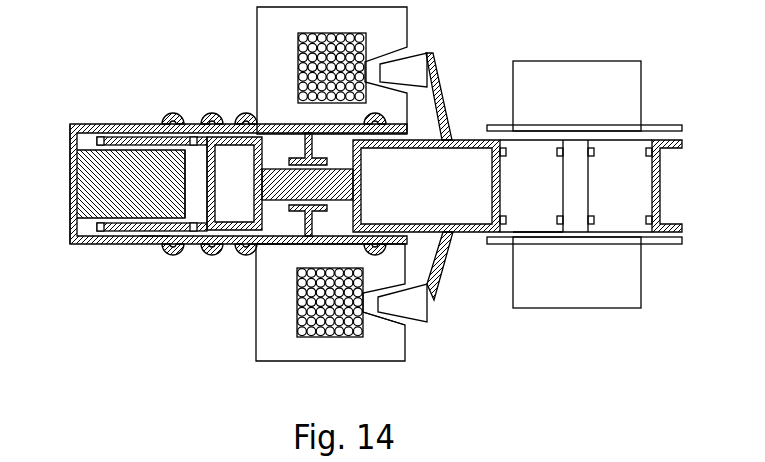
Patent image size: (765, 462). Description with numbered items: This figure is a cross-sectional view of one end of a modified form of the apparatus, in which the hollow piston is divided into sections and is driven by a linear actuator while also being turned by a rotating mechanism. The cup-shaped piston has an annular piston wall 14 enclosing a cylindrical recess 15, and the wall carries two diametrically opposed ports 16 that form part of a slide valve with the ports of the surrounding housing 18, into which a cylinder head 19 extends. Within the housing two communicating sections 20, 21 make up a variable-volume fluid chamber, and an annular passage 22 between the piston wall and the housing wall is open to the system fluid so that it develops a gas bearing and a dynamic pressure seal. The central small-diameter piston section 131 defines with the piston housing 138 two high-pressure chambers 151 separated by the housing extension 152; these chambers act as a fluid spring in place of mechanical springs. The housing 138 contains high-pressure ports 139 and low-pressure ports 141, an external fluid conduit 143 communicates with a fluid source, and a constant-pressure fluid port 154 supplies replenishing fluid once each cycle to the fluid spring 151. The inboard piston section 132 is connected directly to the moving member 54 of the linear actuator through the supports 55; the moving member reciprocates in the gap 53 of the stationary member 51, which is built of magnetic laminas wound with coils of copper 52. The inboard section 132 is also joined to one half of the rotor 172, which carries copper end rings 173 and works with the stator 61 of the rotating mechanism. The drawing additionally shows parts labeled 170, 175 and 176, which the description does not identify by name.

The piston wall 14 is at (128, 232).
The cylindrical recess 15 is at (101, 232).
The ports 16 is at (194, 232).
The housing 18 is at (109, 124).
The cylinder head 19 is at (95, 182).
The communicating section 20 is at (196, 169).
The communicating section 21 is at (83, 246).
The annular passage 22 is at (152, 240).
The stationary member 51 is at (331, 359).
The coils of copper 52 is at (306, 340).
The gap 53 is at (383, 316).
The moving member 54 is at (399, 311).
The support 55 is at (440, 85).
The stator 61 is at (564, 104).
The central piston section 131 is at (344, 188).
The inboard piston section 132 is at (410, 194).
The piston housing 138 is at (265, 247).
The high-pressure ports 139 is at (173, 113).
The low-pressure ports 141 is at (217, 114).
The external fluid conduit 143 is at (250, 115).
The chambers 151 is at (325, 234).
The housing extension 152 is at (311, 134).
The fluid port 154 is at (371, 253).
The hollow block 170 is at (222, 200).
The rotor 172 is at (515, 196).
The copper end rings 173 is at (591, 145).
The flange 175 is at (492, 245).
The frame bottom wall 176 is at (536, 237).